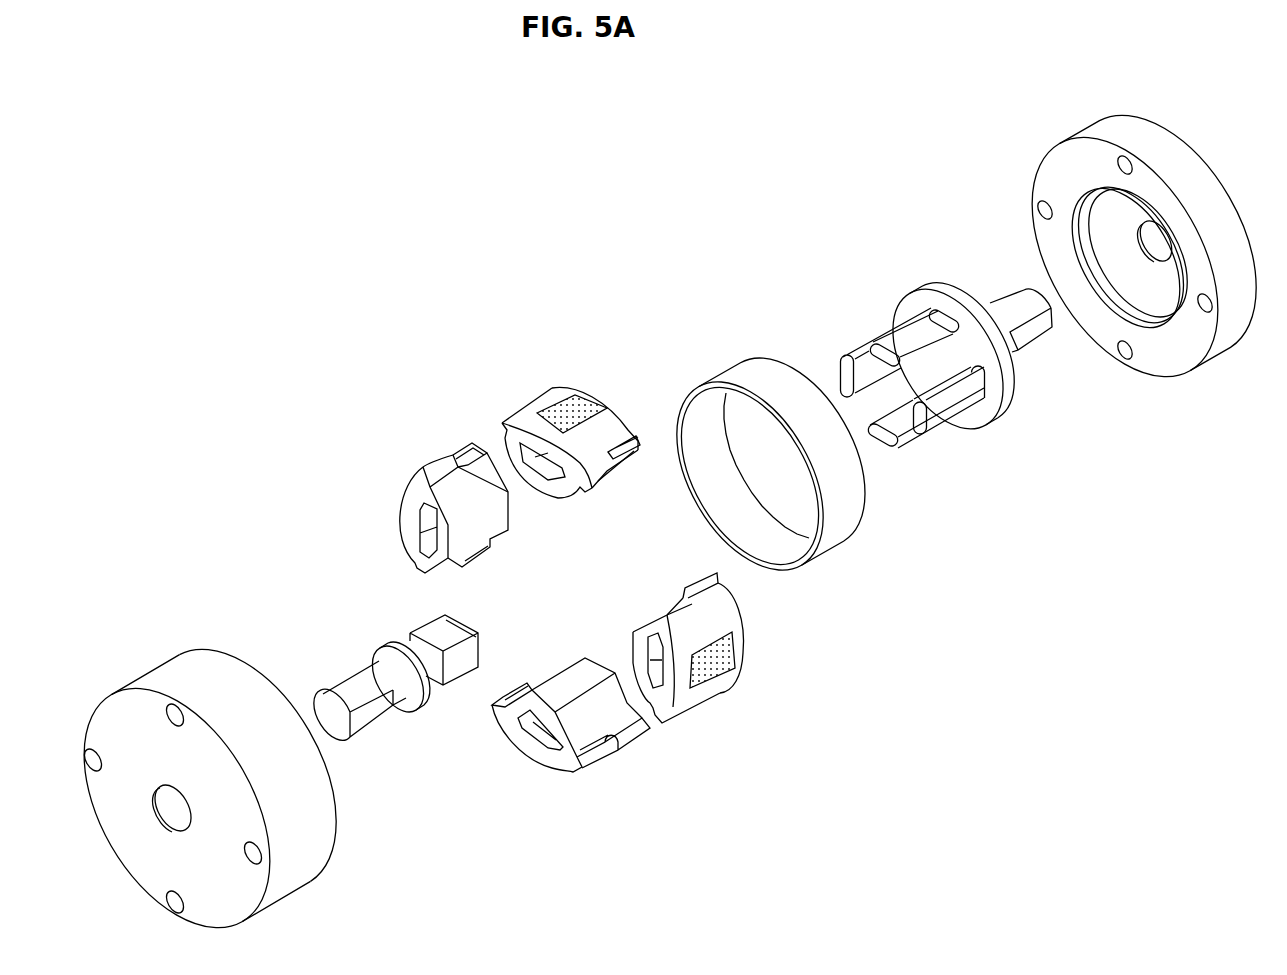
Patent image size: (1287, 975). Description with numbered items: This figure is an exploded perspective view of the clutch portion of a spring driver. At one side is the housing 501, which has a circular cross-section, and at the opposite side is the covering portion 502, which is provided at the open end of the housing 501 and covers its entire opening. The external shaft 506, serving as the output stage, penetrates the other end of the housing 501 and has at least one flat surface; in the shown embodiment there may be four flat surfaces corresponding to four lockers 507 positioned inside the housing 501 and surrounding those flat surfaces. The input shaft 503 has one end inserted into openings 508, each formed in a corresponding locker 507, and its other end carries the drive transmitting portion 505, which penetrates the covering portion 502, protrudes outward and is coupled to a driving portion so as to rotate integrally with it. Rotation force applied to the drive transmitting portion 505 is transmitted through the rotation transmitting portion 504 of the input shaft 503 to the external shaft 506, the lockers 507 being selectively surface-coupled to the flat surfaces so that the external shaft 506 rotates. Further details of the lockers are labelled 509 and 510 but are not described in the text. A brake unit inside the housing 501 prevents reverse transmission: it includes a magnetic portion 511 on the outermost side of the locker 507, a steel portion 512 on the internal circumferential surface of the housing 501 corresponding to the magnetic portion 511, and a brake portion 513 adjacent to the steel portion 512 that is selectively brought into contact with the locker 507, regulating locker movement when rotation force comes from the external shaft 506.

The housing 501 is at (202, 660).
The covering portion 502 is at (1089, 268).
The input shaft 503 is at (959, 370).
The rotation transmitting portion 504 is at (922, 432).
The drive transmitting portion 505 is at (1032, 333).
The external shaft 506 is at (365, 668).
The locker 507 is at (500, 410).
The opening 508 is at (528, 455).
The lip 509 is at (602, 486).
The tab 510 is at (625, 455).
The magnetic portion 511 is at (560, 401).
The steel portion 512 is at (752, 370).
The brake portion 513 is at (1148, 323).